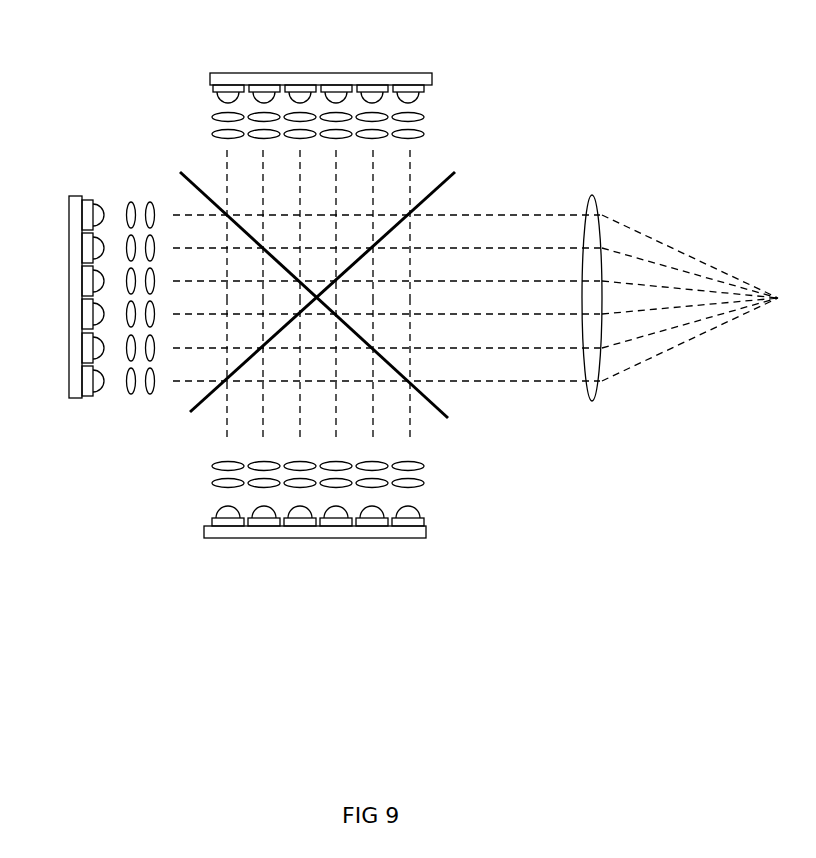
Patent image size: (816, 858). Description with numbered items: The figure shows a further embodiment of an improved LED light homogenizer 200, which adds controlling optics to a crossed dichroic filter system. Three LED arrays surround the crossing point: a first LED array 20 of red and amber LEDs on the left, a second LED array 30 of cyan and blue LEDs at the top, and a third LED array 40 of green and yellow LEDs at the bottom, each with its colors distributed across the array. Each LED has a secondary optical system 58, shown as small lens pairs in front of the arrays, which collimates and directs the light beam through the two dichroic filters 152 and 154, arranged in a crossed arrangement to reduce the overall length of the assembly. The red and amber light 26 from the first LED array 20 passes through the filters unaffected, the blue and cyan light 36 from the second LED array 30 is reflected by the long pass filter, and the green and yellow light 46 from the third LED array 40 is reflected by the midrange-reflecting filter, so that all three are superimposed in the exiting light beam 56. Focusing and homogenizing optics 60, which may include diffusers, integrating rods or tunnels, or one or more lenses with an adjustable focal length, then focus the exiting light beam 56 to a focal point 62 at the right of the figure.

The first LED array 20 is at (75, 197).
The second LED array 30 is at (222, 82).
The third LED array 40 is at (422, 531).
The secondary optical system 58 is at (438, 122).
The red and amber light 26 is at (244, 298).
The blue and cyan light 36 is at (318, 224).
The green and yellow light 46 is at (318, 370).
The light beam 56 is at (459, 298).
The dichroic filter 152 is at (458, 176).
The dichroic filter 154 is at (180, 176).
The focusing and homogenizing optics 60 is at (590, 197).
The focal point 62 is at (779, 298).
The LED light homogenizer 200 is at (541, 123).